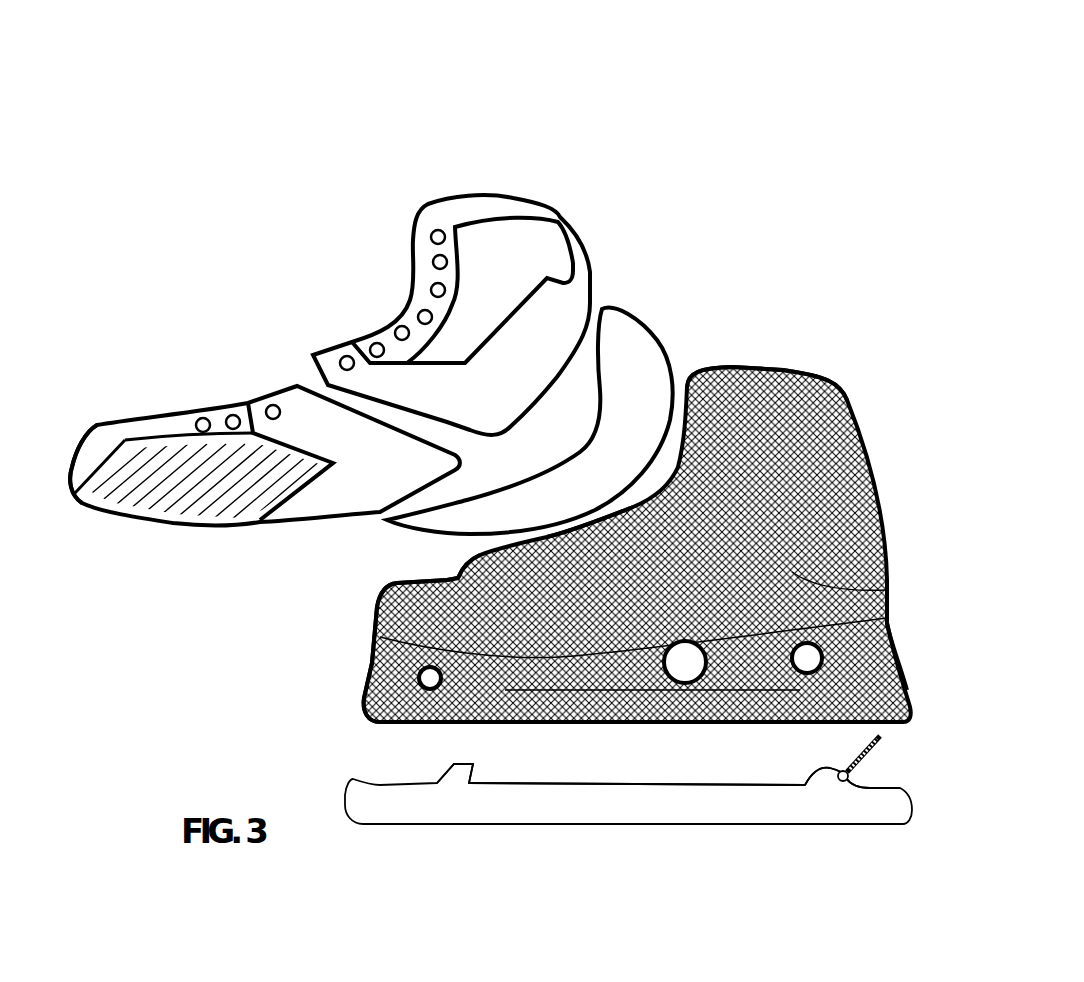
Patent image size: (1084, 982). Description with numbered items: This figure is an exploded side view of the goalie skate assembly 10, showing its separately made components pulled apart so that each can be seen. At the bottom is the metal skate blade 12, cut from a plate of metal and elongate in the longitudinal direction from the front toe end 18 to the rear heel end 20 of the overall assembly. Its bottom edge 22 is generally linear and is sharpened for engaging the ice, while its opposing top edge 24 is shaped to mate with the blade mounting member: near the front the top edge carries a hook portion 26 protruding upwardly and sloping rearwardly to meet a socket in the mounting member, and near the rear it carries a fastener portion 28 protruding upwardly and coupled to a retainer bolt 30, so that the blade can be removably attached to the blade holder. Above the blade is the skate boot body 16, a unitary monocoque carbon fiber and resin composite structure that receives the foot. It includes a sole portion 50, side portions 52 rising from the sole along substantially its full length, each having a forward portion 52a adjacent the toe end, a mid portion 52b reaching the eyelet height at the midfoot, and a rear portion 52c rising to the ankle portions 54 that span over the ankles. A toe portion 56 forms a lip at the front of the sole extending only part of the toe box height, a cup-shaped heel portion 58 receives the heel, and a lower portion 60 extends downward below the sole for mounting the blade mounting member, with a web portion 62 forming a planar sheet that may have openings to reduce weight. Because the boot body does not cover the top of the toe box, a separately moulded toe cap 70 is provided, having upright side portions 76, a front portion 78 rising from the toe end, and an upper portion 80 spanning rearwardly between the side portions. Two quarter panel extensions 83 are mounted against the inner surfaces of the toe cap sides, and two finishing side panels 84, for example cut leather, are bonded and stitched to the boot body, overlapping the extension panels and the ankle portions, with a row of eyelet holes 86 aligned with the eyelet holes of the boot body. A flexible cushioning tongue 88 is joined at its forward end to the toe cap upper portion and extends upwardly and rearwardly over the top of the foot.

The goalie skate assembly 10 is at (505, 76).
The skate blade 12 is at (507, 807).
The skate boot body 16 is at (839, 358).
The front toe end 18 is at (336, 632).
The rear heel end 20 is at (905, 526).
The bottom edge 22 is at (637, 820).
The top edge 24 is at (647, 783).
The hook portion 26 is at (473, 765).
The fastener portion 28 is at (816, 772).
The retainer bolt 30 is at (868, 752).
The sole portion 50 is at (583, 657).
The side portions 52 is at (622, 598).
The forward portion 52a is at (420, 603).
The mid portion 52b is at (607, 537).
The rear portion 52c is at (890, 590).
The ankle portions 54 is at (772, 470).
The toe portion 56 is at (377, 602).
The heel portion 58 is at (890, 557).
The lower portion 60 is at (348, 678).
The web portion 62 is at (480, 673).
The toe cap 70 is at (147, 374).
The side portions 76 is at (177, 497).
The front portion 78 is at (83, 457).
The upper portion 80 is at (138, 423).
The quarter panel extensions 83 is at (290, 400).
The finishing side panels 84 is at (488, 224).
The eyelet holes 86 is at (377, 343).
The tongue 88 is at (625, 333).